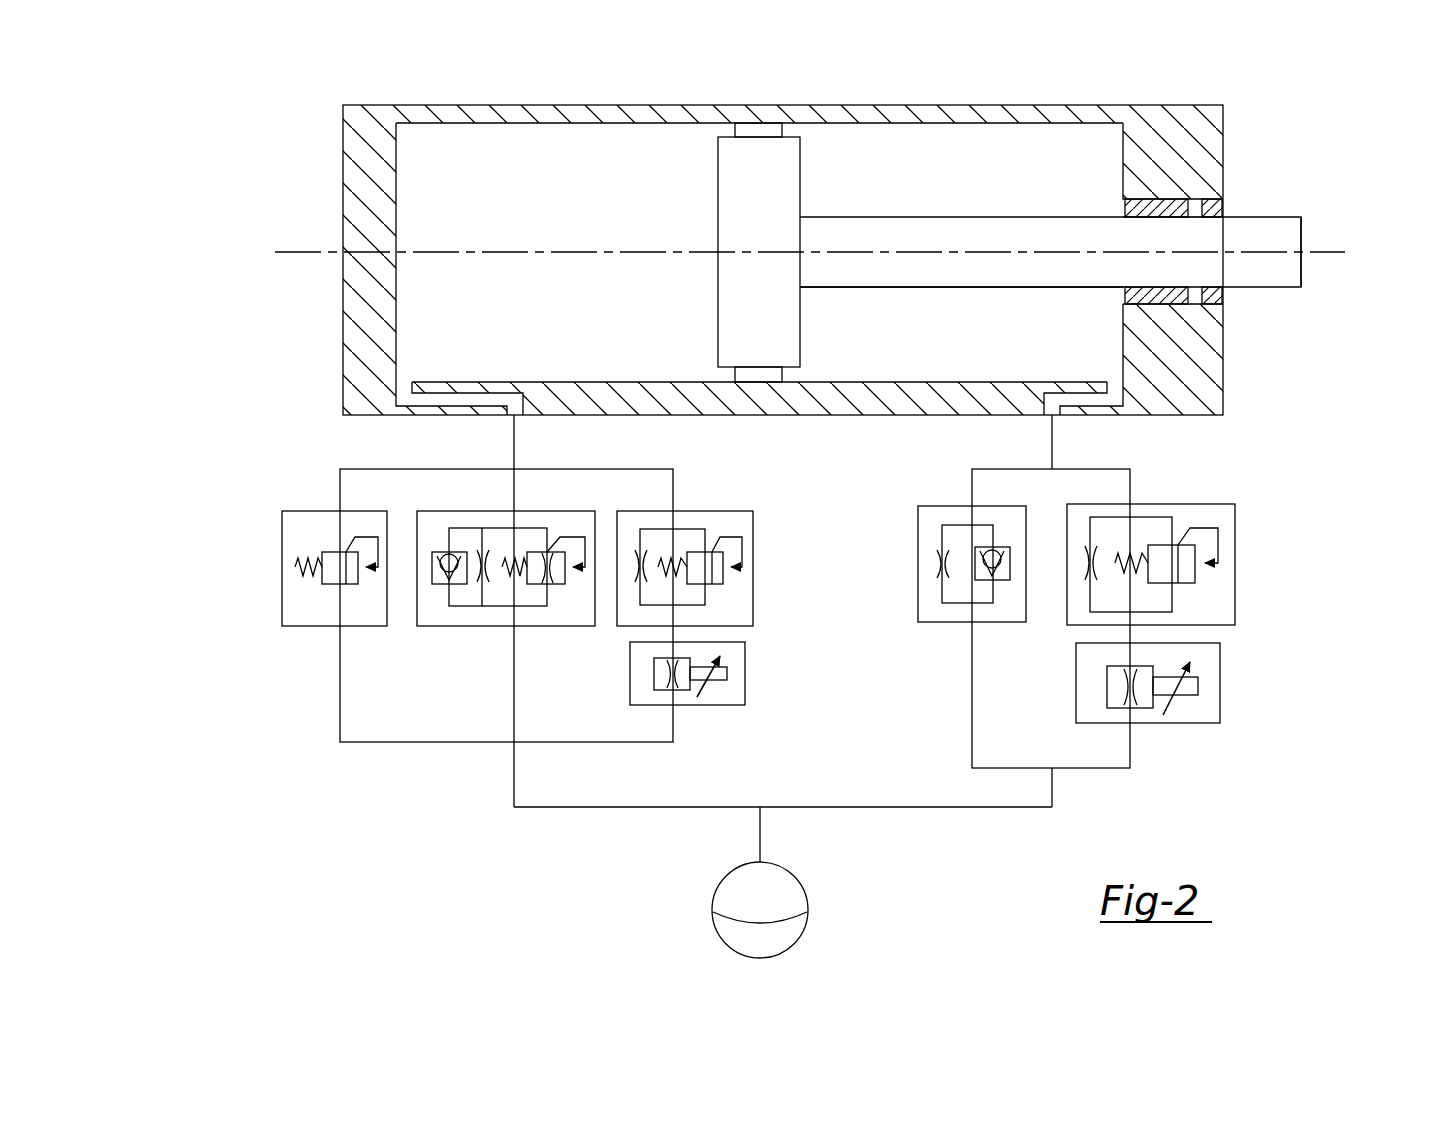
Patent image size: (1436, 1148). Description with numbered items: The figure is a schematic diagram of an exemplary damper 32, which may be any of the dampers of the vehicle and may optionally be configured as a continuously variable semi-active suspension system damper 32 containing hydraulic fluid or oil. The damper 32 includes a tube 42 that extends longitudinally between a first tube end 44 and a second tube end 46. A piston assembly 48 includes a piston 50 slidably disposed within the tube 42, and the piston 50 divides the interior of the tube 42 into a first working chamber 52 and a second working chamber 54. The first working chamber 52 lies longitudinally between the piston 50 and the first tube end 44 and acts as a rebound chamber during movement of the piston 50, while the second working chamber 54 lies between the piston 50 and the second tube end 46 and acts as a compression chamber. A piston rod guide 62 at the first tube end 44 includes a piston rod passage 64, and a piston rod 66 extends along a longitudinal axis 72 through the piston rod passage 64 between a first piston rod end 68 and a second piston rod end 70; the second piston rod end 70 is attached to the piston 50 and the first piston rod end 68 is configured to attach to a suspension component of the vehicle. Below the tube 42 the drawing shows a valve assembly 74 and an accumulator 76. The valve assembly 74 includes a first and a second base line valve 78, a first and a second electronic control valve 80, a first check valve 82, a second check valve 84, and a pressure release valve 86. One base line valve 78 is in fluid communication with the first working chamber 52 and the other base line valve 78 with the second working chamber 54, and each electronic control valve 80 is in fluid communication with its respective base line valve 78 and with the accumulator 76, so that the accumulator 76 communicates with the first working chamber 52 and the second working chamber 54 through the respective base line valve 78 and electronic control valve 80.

The damper 32 is at (264, 93).
The tube 42 is at (574, 122).
The first tube end 44 is at (1126, 134).
The second tube end 46 is at (397, 308).
The piston assembly 48 is at (824, 160).
The piston 50 is at (737, 322).
The first working chamber 52 is at (880, 362).
The second working chamber 54 is at (695, 362).
The piston rod guide 62 is at (1172, 297).
The piston rod passage 64 is at (1222, 222).
The piston rod 66 is at (988, 228).
The first piston rod end 68 is at (1302, 225).
The second piston rod end 70 is at (835, 276).
The longitudinal axis 72 is at (1333, 256).
The valve assembly 74 is at (1306, 518).
The accumulator 76 is at (796, 876).
The base line valve 78 is at (753, 545).
The electronic control valve 80 is at (740, 690).
The first check valve 82 is at (943, 622).
The second check valve 84 is at (470, 626).
The pressure release valve 86 is at (292, 626).